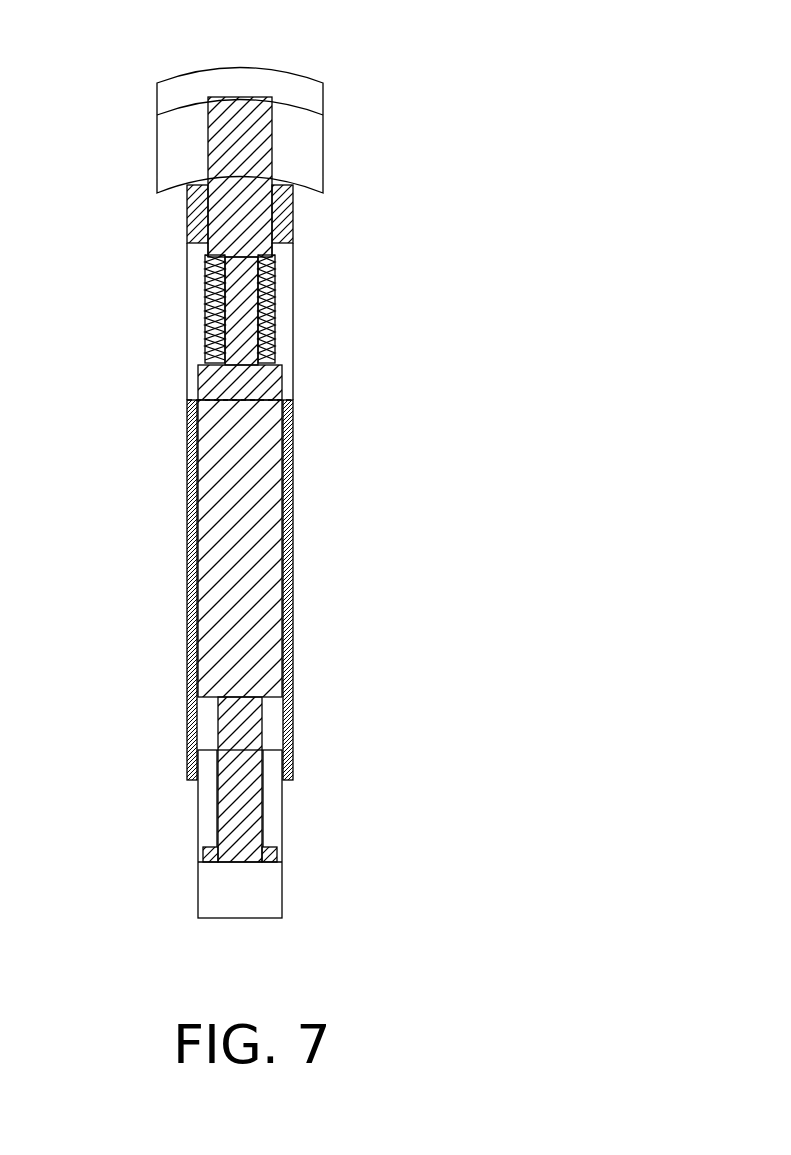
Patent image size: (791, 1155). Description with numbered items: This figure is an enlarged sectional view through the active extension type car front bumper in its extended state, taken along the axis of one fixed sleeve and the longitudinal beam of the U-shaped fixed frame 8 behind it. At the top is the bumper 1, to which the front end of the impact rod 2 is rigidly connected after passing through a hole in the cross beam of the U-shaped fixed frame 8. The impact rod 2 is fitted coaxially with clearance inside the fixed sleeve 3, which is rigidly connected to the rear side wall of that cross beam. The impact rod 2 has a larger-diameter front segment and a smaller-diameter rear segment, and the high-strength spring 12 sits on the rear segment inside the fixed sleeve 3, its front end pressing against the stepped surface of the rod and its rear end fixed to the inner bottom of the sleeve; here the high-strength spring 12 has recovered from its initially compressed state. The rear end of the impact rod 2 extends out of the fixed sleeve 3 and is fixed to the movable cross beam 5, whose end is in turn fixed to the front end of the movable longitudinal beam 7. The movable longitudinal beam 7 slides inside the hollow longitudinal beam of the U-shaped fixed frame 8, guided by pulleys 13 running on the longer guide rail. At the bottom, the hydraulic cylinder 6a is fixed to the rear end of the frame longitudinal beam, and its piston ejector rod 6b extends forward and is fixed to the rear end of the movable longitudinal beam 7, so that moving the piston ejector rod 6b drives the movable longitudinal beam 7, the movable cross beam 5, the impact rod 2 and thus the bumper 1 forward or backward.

The bumper 1 is at (300, 165).
The impact rod 2 is at (275, 212).
The fixed sleeve 3 is at (274, 300).
The movable cross beam 5 is at (277, 385).
The hydraulic cylinder 6a is at (268, 887).
The piston ejector rod 6b is at (220, 818).
The movable longitudinal beam 7 is at (230, 598).
The U-shaped fixed frame 8 is at (197, 500).
The high-strength spring 12 is at (204, 310).
The pulley 13 is at (285, 497).